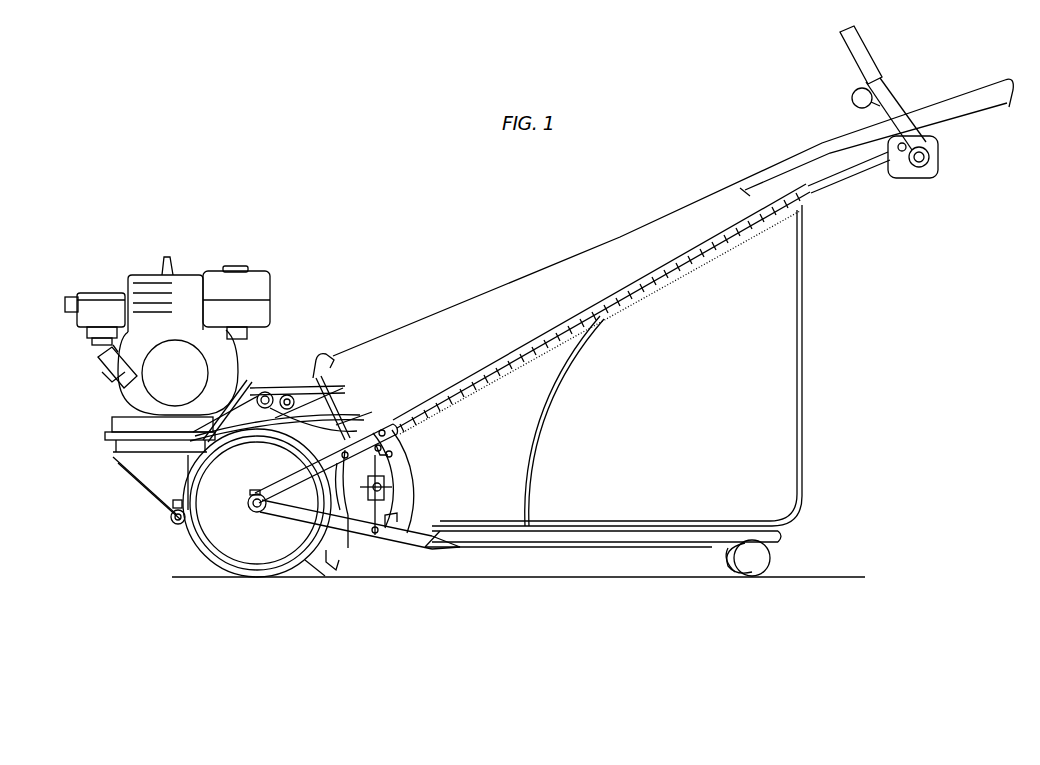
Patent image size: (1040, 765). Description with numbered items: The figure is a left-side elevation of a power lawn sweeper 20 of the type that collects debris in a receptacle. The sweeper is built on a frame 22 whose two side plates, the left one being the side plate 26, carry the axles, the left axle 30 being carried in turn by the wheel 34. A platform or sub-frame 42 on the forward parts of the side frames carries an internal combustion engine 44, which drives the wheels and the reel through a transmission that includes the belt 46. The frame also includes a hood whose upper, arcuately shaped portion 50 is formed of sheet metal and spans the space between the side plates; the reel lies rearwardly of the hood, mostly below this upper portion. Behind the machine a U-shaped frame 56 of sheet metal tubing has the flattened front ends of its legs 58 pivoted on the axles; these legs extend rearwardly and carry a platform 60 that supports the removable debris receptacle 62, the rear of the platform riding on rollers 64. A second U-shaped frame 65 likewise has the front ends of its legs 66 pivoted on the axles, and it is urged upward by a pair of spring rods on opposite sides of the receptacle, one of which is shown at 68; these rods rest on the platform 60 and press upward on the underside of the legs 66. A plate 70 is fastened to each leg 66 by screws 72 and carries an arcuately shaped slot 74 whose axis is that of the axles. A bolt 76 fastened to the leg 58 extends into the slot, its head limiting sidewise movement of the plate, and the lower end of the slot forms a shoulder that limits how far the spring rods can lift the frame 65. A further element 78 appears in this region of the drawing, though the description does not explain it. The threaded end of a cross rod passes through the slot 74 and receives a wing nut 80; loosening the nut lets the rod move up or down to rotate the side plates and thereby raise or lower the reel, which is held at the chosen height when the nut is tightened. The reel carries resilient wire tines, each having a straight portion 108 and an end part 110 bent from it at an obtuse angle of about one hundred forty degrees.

The sweeper 20 is at (258, 551).
The frame 22 is at (296, 430).
The side plate 26 is at (347, 432).
The axle 30 is at (247, 503).
The wheel 34 is at (222, 538).
The platform or sub-frame 42 is at (113, 458).
The internal combustion engine 44 is at (150, 283).
The belt 46 is at (188, 463).
The upper arcuately shaped portion of hood 50 is at (318, 376).
The U-shaped frame 56 is at (779, 536).
The legs of U-shaped frame 58 is at (410, 548).
The platform 60 is at (576, 545).
The removable debris receptacle 62 is at (793, 400).
The rollers 64 is at (762, 560).
The U-shaped frame 65 is at (952, 123).
The legs of U-shaped frame 66 is at (287, 485).
The spring rod 68 is at (535, 410).
The plate 70 is at (400, 484).
The screws 72 is at (380, 430).
The arcuately shaped slot 74 is at (395, 498).
The bolt 76 is at (375, 535).
The rod 78 is at (348, 556).
The wing nut 80 is at (412, 462).
The portion of tine 108 is at (312, 566).
The end part of tine 110 is at (322, 576).